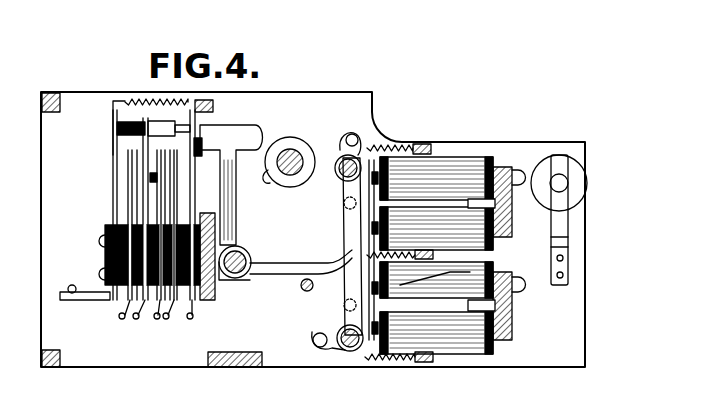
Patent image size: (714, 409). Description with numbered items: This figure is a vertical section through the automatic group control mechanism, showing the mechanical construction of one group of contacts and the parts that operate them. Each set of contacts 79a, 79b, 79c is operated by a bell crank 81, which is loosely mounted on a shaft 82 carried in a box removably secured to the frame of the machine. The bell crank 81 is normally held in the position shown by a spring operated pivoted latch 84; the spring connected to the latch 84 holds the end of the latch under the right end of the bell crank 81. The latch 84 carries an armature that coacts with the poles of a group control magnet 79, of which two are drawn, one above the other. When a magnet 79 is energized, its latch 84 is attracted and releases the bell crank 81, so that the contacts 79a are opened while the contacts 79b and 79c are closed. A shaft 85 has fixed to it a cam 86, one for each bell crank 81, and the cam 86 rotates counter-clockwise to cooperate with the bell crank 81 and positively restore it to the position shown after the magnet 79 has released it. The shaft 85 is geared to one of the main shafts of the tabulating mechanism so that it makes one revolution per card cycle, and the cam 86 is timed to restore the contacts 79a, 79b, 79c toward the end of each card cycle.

The group control magnet 79 is at (452, 172).
The contacts 79a is at (205, 125).
The contacts 79b is at (170, 151).
The contacts 79c is at (128, 160).
The bell crank 81 is at (280, 262).
The shaft 82 is at (245, 268).
The spring operated pivoted latch 84 is at (355, 217).
The shaft 85 is at (300, 155).
The cam 86 is at (268, 172).